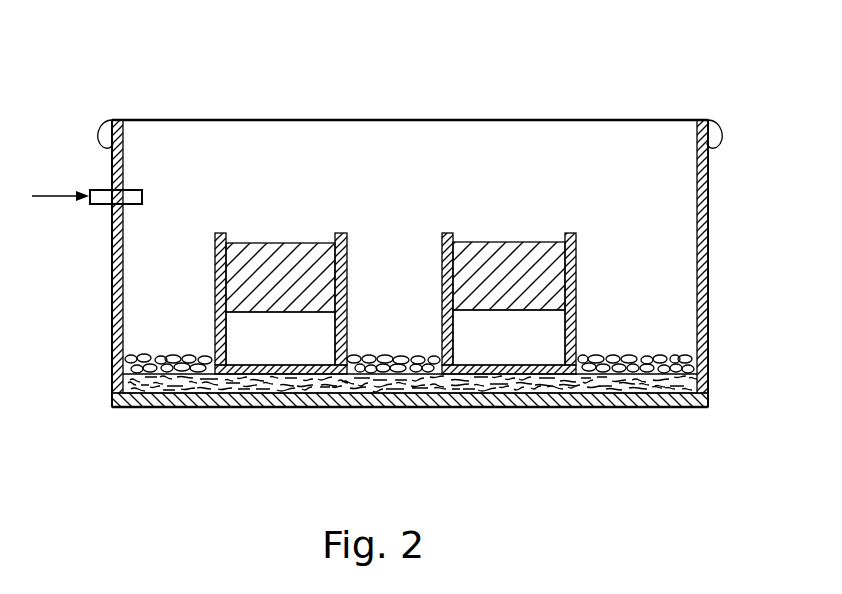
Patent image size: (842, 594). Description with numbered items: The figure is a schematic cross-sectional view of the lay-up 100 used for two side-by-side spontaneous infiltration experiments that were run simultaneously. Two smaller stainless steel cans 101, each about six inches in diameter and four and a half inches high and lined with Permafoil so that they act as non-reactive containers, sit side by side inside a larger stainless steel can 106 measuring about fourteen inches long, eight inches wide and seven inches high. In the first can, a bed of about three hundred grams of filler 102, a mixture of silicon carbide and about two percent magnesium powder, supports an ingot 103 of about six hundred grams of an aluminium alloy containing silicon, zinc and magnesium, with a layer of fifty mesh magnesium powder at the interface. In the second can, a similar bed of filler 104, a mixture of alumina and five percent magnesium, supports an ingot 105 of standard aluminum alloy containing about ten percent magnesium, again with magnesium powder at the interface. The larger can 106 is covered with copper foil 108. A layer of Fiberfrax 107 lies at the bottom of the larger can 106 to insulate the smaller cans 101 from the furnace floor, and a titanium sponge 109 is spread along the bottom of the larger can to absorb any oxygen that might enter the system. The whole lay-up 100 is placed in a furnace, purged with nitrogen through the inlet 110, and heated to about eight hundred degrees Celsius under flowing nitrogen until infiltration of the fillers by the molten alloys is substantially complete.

The lay-up 100 is at (564, 76).
The stainless steel can 101 is at (347, 292).
The filler 102 is at (300, 343).
The ingot 103 is at (322, 205).
The filler 104 is at (481, 343).
The ingot 105 is at (538, 253).
The stainless steel can 106 is at (112, 294).
The Fiberfrax layer 107 is at (577, 407).
The copper foil 108 is at (669, 119).
The titanium sponge 109 is at (680, 362).
The inlet 110 is at (88, 208).